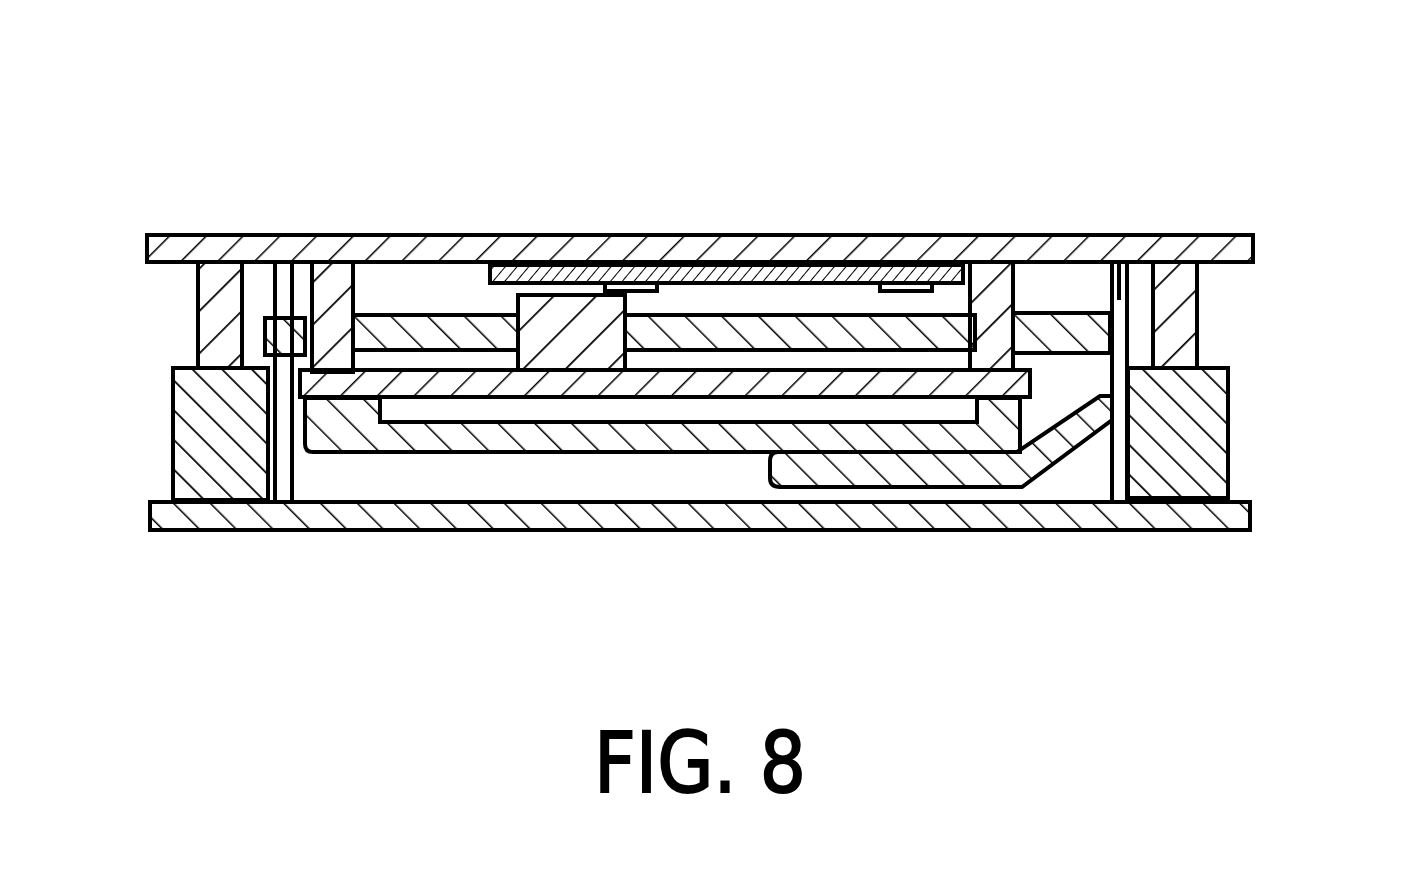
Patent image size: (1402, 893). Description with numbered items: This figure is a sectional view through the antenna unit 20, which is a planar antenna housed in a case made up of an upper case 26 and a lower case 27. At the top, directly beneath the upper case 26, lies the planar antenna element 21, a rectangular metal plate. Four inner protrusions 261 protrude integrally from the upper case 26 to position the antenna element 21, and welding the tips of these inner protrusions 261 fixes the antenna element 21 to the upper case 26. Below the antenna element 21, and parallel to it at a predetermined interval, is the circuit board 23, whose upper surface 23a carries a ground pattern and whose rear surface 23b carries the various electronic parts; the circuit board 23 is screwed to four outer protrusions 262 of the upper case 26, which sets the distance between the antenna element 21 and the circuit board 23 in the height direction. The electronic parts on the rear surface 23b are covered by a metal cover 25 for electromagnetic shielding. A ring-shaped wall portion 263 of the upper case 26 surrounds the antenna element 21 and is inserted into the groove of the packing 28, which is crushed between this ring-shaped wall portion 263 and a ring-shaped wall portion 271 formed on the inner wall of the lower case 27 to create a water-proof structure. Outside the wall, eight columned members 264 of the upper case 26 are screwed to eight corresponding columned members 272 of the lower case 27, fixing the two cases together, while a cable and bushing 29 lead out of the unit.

The antenna unit 20 is at (714, 220).
The planar antenna element 21 is at (520, 235).
The circuit board 23 is at (487, 397).
The upper surface 23a is at (430, 372).
The rear surface 23b is at (690, 400).
The metal cover 25 is at (592, 455).
The upper case 26 is at (1120, 300).
The lower case 27 is at (905, 512).
The packing 28 is at (1060, 322).
The cable and bushing 29 is at (790, 488).
The inner protrusions 261 is at (620, 270).
The outer protrusions 262 is at (335, 290).
The ring-shaped wall portion 263 is at (255, 287).
The columned members 264 is at (198, 303).
The ring-shaped wall portion 271 is at (295, 455).
The columned members 272 is at (175, 438).